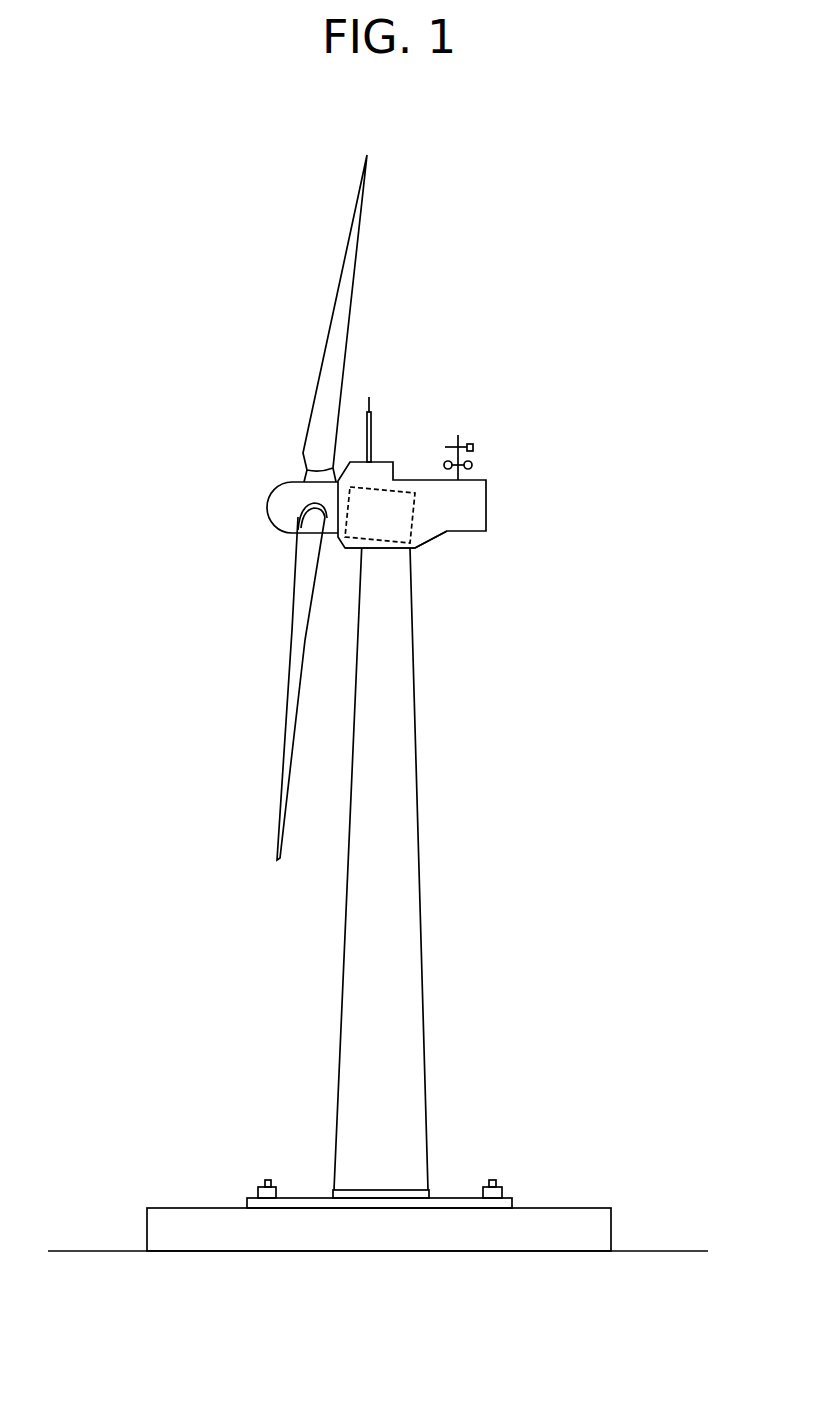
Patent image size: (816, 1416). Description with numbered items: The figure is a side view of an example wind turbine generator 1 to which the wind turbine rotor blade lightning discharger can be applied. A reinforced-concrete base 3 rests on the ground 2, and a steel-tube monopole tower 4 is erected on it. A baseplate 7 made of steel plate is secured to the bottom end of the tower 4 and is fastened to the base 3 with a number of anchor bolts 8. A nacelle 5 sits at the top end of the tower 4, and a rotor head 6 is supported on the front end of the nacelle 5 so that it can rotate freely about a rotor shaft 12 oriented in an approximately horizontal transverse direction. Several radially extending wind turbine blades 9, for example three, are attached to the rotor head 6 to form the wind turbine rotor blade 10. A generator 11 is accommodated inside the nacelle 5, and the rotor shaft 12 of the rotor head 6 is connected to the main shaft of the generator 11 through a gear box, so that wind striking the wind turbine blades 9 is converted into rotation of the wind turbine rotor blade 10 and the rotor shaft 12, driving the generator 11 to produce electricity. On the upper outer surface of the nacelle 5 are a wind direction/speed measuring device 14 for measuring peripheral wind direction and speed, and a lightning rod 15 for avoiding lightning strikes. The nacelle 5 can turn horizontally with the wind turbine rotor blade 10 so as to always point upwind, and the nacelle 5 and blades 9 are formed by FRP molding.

The wind turbine generator 1 is at (597, 468).
The ground 2 is at (650, 1251).
The base 3 is at (557, 1207).
The tower 4 is at (410, 683).
The nacelle 5 is at (417, 478).
The rotor head 6 is at (266, 507).
The baseplate 7 is at (313, 1197).
The anchor bolts 8 is at (267, 1180).
The wind turbine blades 9 is at (353, 260).
The wind turbine rotor blade 10 is at (316, 337).
The generator 11 is at (428, 538).
The rotor shaft 12 is at (338, 537).
The wind direction/speed measuring device 14 is at (460, 476).
The lightning rod 15 is at (372, 420).